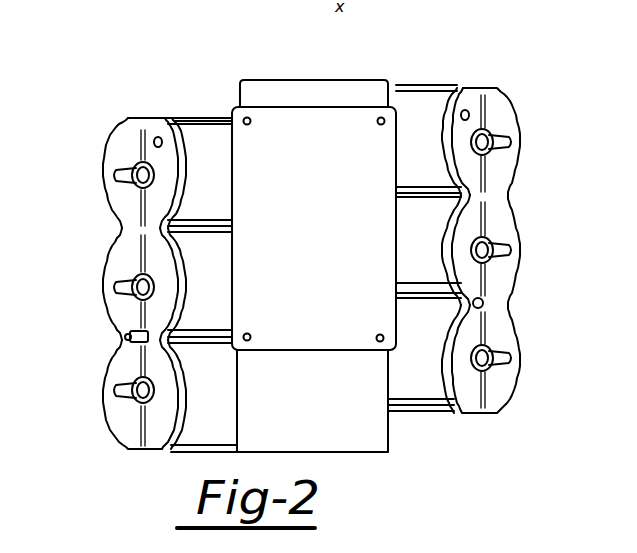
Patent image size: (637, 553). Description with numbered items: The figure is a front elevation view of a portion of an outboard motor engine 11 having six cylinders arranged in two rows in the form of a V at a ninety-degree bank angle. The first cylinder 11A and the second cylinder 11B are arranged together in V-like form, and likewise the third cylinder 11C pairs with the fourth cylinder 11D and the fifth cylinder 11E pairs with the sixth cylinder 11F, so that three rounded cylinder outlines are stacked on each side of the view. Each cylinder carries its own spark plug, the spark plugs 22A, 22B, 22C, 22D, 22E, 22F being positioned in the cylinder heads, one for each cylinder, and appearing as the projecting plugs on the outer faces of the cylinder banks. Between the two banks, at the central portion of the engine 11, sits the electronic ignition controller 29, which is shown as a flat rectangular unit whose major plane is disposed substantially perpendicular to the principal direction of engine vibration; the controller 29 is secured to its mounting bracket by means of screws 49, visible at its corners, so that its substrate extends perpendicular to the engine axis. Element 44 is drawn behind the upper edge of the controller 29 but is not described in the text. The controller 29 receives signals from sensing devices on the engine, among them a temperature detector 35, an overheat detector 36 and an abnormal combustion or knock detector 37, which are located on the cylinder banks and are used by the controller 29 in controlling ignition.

The engine 11 is at (213, 119).
The first cylinder 11A is at (505, 115).
The second cylinder 11B is at (135, 145).
The third cylinder 11C is at (500, 222).
The fourth cylinder 11D is at (130, 256).
The fifth cylinder 11E is at (505, 388).
The sixth cylinder 11F is at (128, 420).
The spark plug 22A is at (511, 143).
The spark plug 22B is at (120, 176).
The spark plug 22C is at (509, 251).
The spark plug 22D is at (123, 289).
The spark plug 22E is at (511, 358).
The spark plug 22F is at (118, 390).
The electronic ignition controller 29 is at (336, 104).
The temperature detector 35 is at (490, 303).
The overheat detector 36 is at (140, 117).
The knock detector 37 is at (128, 350).
The rear cover 44 is at (290, 96).
The screws 49 is at (384, 116).